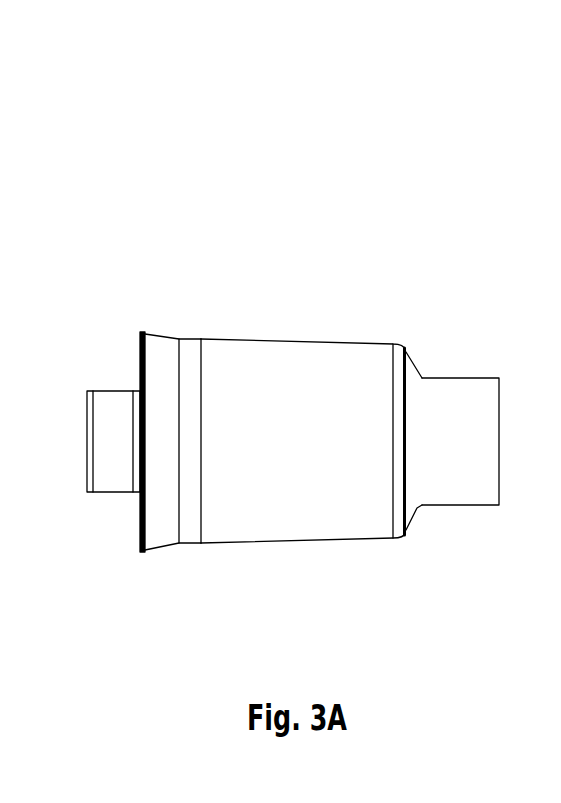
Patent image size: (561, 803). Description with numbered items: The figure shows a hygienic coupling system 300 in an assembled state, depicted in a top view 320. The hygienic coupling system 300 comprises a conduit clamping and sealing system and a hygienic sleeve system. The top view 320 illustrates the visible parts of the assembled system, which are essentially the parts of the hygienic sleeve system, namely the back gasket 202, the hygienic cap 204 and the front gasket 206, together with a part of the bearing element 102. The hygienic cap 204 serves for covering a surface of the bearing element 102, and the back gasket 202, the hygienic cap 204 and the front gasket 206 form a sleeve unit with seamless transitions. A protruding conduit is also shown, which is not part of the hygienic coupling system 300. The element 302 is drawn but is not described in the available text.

The hygienic coupling system 300 is at (446, 113).
The top view 320 is at (310, 211).
The back gasket 202 is at (165, 336).
The hygienic cap 204 is at (287, 343).
The front gasket 206 is at (412, 360).
The outlet stub 302 is at (465, 377).
The bearing element 102 is at (107, 495).